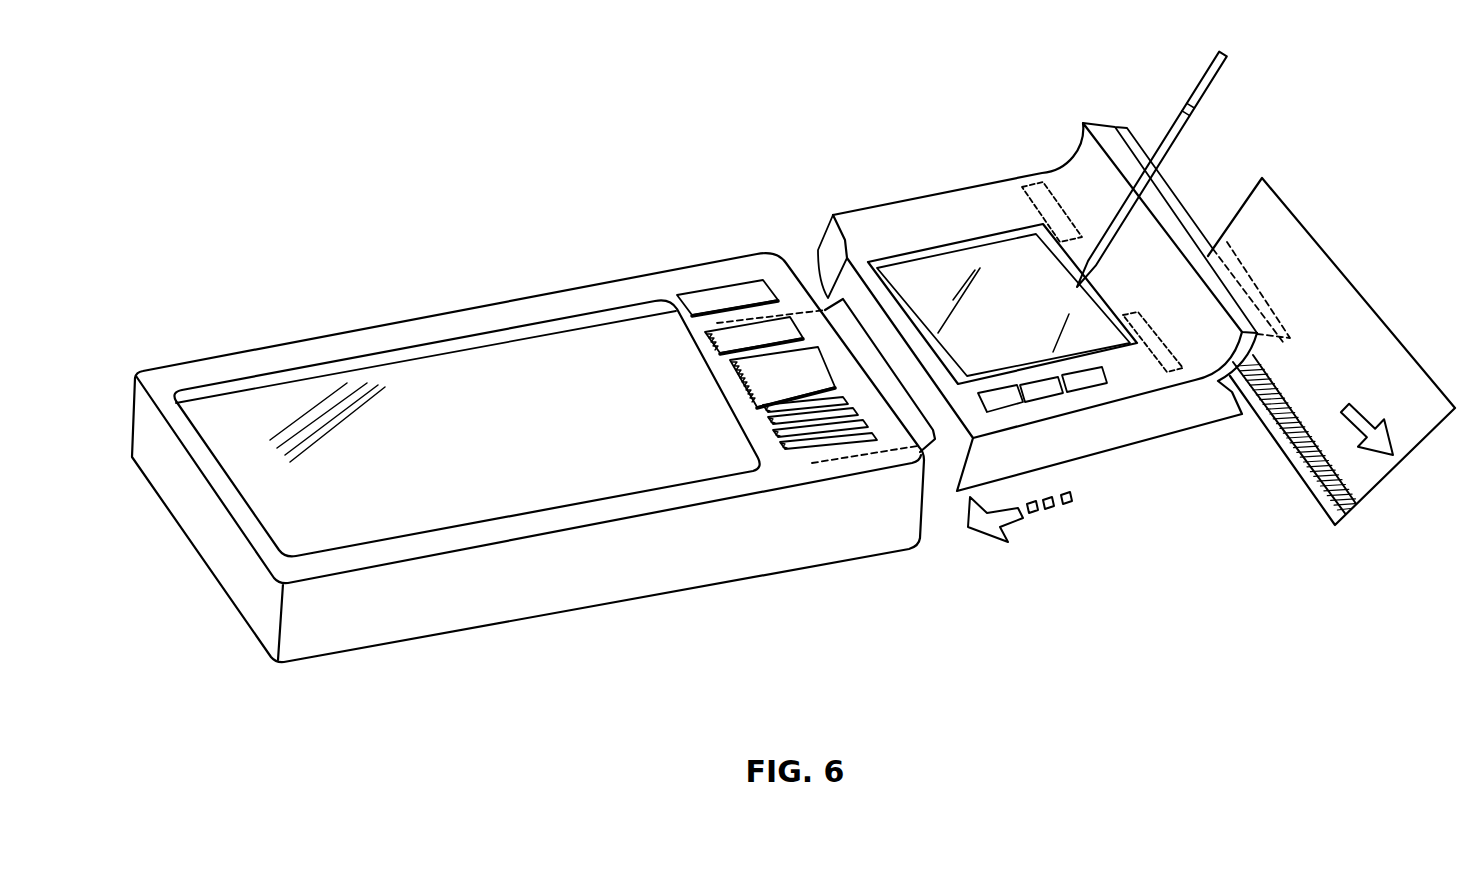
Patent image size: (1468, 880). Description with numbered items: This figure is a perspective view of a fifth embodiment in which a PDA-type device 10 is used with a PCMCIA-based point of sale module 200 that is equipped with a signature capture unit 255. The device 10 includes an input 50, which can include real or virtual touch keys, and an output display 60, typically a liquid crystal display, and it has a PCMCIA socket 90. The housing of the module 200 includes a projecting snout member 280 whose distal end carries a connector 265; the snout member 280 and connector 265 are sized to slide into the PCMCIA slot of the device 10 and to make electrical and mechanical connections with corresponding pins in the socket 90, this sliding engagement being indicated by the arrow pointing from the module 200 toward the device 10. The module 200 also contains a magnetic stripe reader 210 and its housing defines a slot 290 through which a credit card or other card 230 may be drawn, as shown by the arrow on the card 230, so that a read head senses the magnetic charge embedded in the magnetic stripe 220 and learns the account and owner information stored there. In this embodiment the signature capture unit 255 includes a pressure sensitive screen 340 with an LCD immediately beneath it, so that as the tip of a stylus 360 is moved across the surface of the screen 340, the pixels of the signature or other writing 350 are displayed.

The device 10 is at (316, 249).
The input 50 is at (692, 220).
The display 60 is at (295, 392).
The socket 90 is at (713, 357).
The connector 265 is at (769, 437).
The module 200 is at (928, 116).
The snout member 280 is at (823, 300).
The slot 290 is at (1111, 117).
The pressure sensitive screen 340 is at (953, 267).
The signature or other writing 350 is at (970, 323).
The signature capture unit 255 is at (1062, 218).
The magnetic stripe reader 210 is at (1160, 330).
The stylus 360 is at (1212, 82).
The card 230 is at (1390, 303).
The magnetic stripe 220 is at (1357, 502).